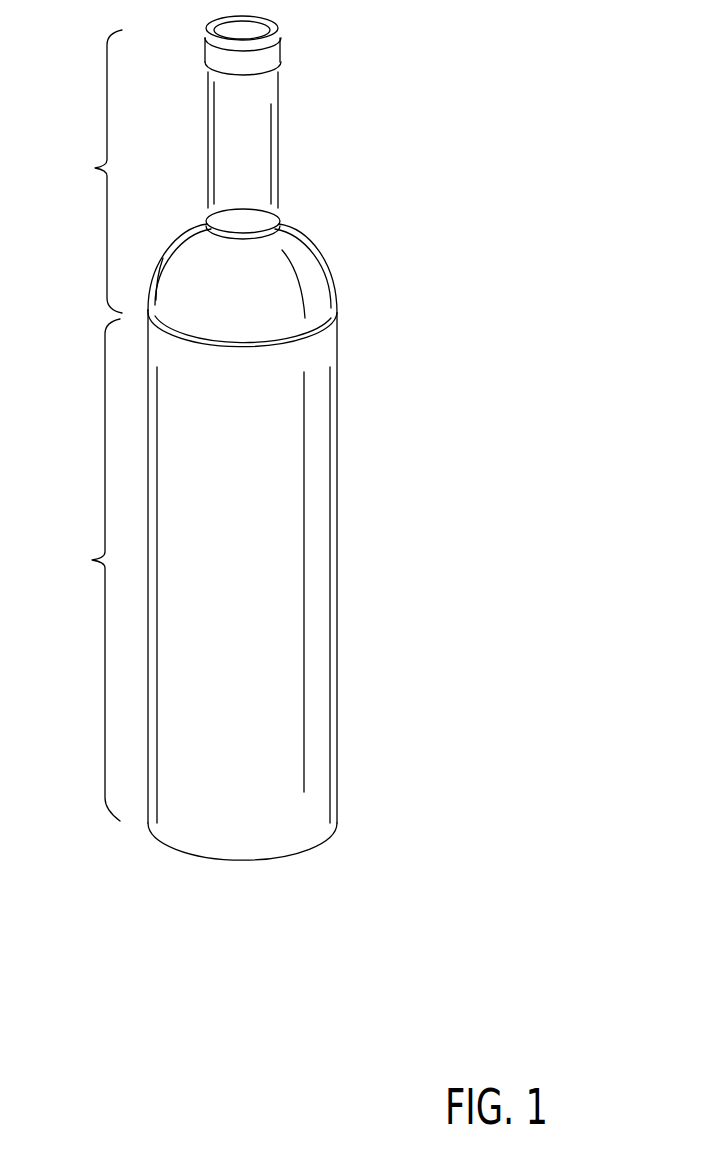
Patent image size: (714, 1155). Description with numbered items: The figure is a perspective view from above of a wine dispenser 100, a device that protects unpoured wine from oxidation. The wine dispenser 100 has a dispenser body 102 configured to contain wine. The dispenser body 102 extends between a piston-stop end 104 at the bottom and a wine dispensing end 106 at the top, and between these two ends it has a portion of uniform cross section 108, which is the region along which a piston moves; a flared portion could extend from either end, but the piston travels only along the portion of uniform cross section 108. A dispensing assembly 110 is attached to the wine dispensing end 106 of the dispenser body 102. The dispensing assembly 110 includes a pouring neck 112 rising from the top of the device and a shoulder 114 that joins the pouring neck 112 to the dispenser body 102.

The wine dispenser 100 is at (339, 438).
The dispenser body 102 is at (347, 570).
The piston-stop end 104 is at (340, 822).
The wine dispensing end 106 is at (338, 315).
The portion of uniform cross section 108 is at (82, 570).
The dispensing assembly 110 is at (84, 171).
The pouring neck 112 is at (278, 158).
The shoulder 114 is at (320, 247).